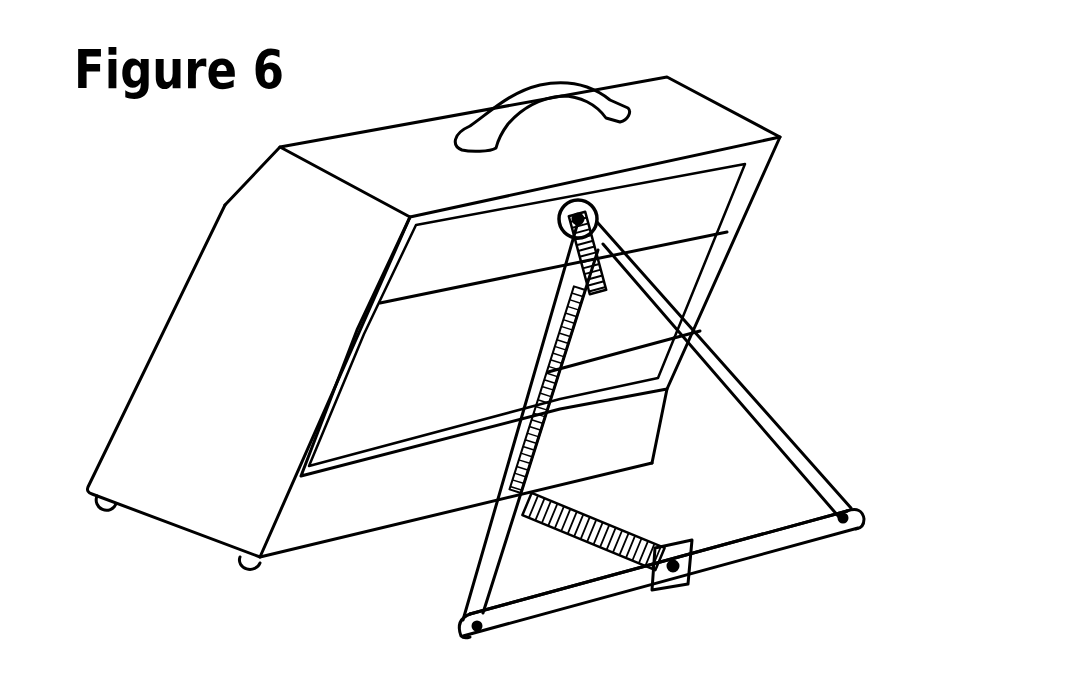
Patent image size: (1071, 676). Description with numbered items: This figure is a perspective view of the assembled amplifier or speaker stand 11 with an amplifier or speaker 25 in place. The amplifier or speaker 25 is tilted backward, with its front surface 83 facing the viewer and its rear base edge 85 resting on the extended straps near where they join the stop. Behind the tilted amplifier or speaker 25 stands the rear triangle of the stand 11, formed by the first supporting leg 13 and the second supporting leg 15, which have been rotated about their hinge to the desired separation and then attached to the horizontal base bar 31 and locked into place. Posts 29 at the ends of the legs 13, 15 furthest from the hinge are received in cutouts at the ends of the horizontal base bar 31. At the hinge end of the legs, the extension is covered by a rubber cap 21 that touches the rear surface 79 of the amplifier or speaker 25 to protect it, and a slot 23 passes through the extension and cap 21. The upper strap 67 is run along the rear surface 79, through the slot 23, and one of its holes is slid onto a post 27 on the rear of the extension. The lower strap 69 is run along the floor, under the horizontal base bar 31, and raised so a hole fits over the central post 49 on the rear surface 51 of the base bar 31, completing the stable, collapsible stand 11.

The amplifier or speaker stand 11 is at (616, 333).
The first supporting leg 13 is at (490, 523).
The second supporting leg 15 is at (803, 453).
The cap 21 is at (590, 204).
The slot 23 is at (562, 210).
The amplifier or speaker 25 is at (458, 341).
The post 27 is at (604, 230).
The post 29 is at (457, 624).
The horizontal base bar 31 is at (800, 547).
The central post 49 is at (677, 584).
The rear surface 51 is at (743, 547).
The upper strap 67 is at (694, 332).
The lower strap 69 is at (550, 548).
The rear surface 79 is at (717, 195).
The front surface 83 is at (167, 320).
The rear base edge 85 is at (327, 540).